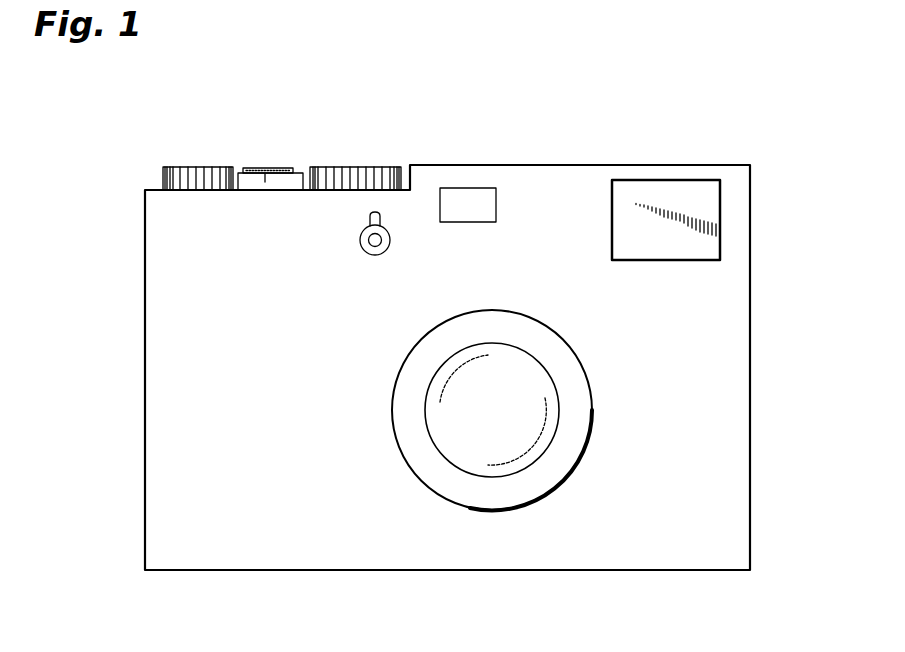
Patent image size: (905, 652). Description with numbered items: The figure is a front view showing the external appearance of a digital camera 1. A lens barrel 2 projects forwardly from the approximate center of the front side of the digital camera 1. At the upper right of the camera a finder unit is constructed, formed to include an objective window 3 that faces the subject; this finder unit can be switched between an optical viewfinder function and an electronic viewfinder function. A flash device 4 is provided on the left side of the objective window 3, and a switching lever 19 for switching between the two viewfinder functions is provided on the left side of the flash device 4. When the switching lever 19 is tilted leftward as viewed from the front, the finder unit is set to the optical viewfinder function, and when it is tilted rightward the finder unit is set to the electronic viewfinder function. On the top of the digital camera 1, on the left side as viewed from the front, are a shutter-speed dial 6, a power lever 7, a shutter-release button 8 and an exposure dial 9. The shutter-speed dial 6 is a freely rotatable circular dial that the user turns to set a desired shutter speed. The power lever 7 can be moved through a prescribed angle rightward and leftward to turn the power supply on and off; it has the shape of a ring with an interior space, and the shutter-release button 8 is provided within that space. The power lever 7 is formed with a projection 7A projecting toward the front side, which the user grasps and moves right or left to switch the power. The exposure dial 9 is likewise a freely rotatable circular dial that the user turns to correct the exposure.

The digital camera 1 is at (772, 101).
The lens barrel 2 is at (593, 421).
The objective window 3 is at (648, 259).
The flash device 4 is at (469, 207).
The shutter-speed dial 6 is at (360, 178).
The power lever 7 is at (297, 172).
The projection 7A is at (273, 174).
The shutter-release button 8 is at (272, 166).
The exposure dial 9 is at (204, 180).
The switching lever 19 is at (363, 251).